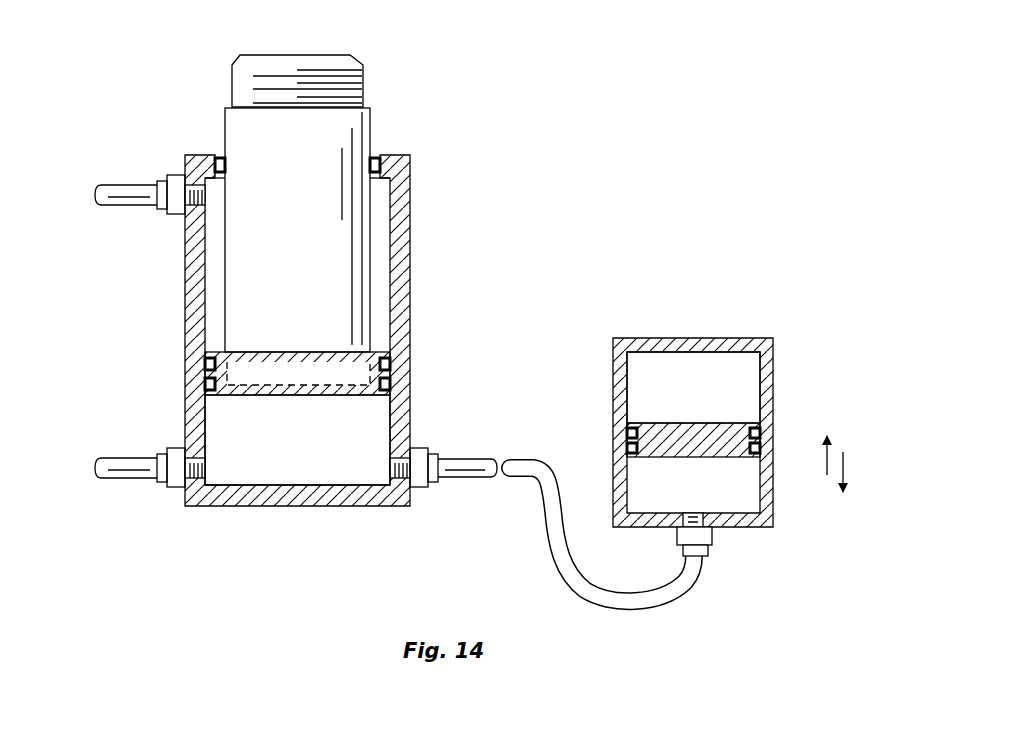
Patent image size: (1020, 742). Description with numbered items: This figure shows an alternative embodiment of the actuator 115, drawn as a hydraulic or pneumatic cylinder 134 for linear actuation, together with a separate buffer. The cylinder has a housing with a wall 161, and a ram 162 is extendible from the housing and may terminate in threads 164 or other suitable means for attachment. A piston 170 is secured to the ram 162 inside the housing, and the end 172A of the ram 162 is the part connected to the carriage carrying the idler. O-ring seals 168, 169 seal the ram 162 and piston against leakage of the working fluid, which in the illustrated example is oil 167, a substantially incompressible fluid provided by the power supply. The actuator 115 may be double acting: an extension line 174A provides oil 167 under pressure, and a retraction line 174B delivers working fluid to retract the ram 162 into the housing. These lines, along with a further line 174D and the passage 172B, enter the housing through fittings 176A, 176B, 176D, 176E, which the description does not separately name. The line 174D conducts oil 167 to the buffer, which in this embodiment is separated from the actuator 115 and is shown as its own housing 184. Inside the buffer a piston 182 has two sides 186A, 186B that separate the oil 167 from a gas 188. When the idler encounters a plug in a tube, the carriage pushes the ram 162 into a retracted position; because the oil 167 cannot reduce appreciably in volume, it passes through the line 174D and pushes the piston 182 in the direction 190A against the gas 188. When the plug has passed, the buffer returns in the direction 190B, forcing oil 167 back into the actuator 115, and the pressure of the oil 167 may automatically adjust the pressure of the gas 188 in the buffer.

The actuator 115 is at (284, 316).
The cylinder 134 is at (284, 283).
The wall 161 is at (403, 226).
The ram 162 is at (337, 138).
The threads 164 is at (363, 78).
The oil 167 is at (370, 433).
The seals 168 is at (392, 363).
The seals 169 is at (215, 158).
The piston 170 is at (380, 364).
The end of the ram 172A is at (278, 55).
The lower fluid passage 172B is at (262, 388).
The extension line 174A is at (118, 480).
The retraction line 174B is at (115, 190).
The line 174D is at (488, 457).
The fitting 176A is at (183, 497).
The fitting 176B is at (190, 213).
The fitting 176D is at (413, 503).
The fitting 176E is at (712, 548).
The piston 182 is at (723, 433).
The second housing 184 is at (775, 352).
The side 186A is at (672, 420).
The side 186B is at (703, 524).
The gas 188 is at (713, 380).
The direction 190A is at (828, 443).
The direction 190B is at (848, 470).